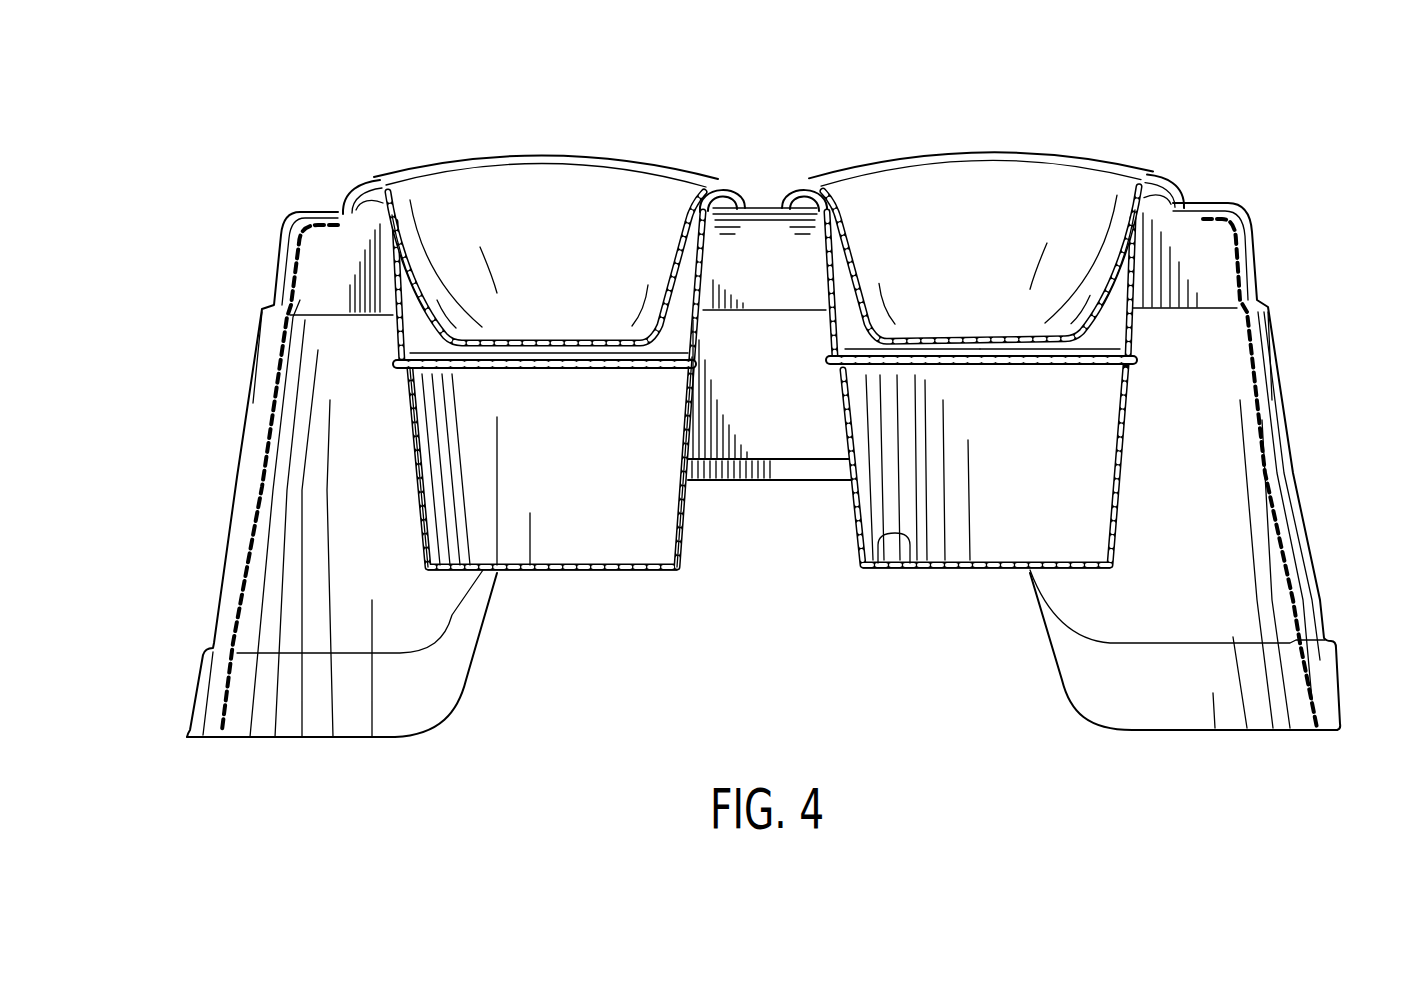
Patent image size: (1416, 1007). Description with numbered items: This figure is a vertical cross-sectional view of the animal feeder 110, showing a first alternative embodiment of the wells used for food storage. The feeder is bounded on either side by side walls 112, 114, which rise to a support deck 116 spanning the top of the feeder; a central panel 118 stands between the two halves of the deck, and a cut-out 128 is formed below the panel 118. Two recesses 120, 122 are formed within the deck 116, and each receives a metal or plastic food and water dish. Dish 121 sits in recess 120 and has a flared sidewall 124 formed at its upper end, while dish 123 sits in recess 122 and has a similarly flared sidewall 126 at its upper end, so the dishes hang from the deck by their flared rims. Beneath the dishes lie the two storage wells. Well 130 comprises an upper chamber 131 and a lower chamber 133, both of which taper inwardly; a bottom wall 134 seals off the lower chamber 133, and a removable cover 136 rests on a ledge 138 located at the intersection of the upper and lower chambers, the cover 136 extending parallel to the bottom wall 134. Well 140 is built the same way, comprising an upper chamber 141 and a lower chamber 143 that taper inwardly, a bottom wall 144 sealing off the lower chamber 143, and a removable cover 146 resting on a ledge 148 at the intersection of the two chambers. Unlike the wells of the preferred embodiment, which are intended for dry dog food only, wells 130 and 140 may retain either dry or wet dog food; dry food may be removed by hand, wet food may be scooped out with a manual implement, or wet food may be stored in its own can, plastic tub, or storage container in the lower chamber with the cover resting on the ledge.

The animal feeder 110 is at (180, 568).
The side wall 112 is at (1290, 525).
The side wall 114 is at (247, 478).
The support deck 116 is at (760, 192).
The panel 118 is at (787, 388).
The recess 120 is at (398, 254).
The food and water dish 121 is at (546, 219).
The recess 122 is at (1108, 247).
The food and water dish 123 is at (981, 217).
The flared sidewall 124 is at (345, 200).
The right rim bead 126 is at (1176, 190).
The cut-out 128 is at (812, 481).
The well 130 is at (517, 424).
The upper chamber 131 is at (415, 352).
The lower chamber 133 is at (676, 505).
The bottom wall 134 is at (560, 572).
The removable cover 136 is at (572, 373).
The ledge 138 is at (430, 374).
The well 140 is at (1019, 436).
The upper chamber 141 is at (1135, 352).
The lower chamber 143 is at (903, 568).
The bottom wall 144 is at (1005, 572).
The removable cover 146 is at (1022, 366).
The ledge 148 is at (900, 386).